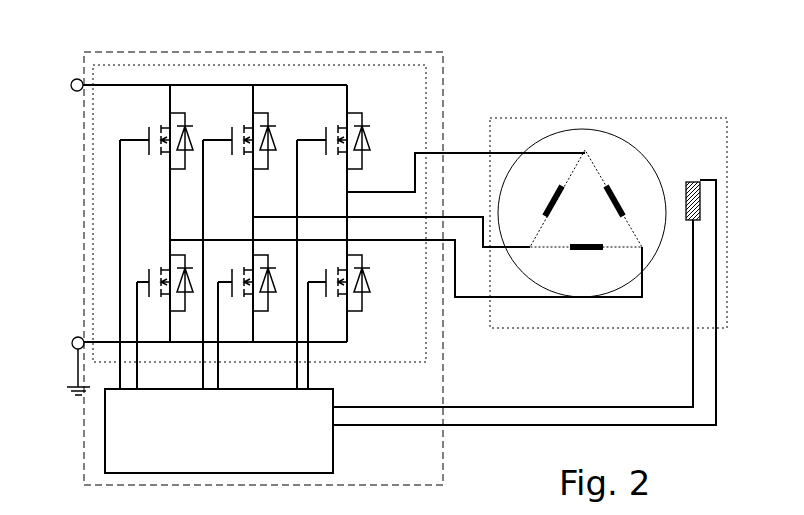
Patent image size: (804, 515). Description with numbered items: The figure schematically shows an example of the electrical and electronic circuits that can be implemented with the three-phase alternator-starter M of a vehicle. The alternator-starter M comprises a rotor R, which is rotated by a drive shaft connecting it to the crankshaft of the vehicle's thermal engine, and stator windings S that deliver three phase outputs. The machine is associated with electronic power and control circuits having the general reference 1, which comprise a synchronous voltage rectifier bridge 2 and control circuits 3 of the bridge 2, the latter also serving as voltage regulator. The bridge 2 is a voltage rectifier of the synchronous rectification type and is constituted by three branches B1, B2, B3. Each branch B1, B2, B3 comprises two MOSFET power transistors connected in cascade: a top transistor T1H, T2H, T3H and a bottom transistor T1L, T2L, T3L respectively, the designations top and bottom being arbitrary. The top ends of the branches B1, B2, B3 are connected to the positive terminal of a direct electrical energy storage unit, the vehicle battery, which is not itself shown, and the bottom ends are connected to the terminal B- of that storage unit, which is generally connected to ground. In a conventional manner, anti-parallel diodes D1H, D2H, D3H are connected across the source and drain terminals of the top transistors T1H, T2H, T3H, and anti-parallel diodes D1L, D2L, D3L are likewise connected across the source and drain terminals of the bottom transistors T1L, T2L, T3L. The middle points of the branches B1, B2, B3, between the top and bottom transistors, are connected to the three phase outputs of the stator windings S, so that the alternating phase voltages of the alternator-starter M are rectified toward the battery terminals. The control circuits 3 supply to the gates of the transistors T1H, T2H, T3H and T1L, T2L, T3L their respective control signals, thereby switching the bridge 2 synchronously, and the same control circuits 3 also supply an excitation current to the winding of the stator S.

The electronic power and control circuits 1 is at (420, 102).
The synchronous voltage rectifier bridge 2 is at (444, 81).
The control circuits 3 is at (322, 454).
The terminal B− B- is at (72, 347).
The first branch B1 is at (178, 106).
The second branch B2 is at (262, 106).
The third branch B3 is at (355, 106).
The top power transistor of the first branch T1H is at (149, 126).
The top power transistor of the second branch T2H is at (231, 152).
The top power transistor of the third branch T3H is at (325, 152).
The bottom power transistor of the first branch T1L is at (148, 272).
The bottom power transistor of the second branch T2L is at (235, 328).
The bottom power transistor of the third branch T3L is at (350, 312).
The anti-parallel diode D1H is at (194, 125).
The anti-parallel diode D2H is at (277, 125).
The anti-parallel diode D3H is at (371, 125).
The anti-parallel diode D1L is at (178, 262).
The anti-parallel diode D2L is at (277, 312).
The anti-parallel diode D3L is at (372, 294).
The alternator-starter M is at (602, 110).
The rotor R is at (626, 188).
The stator windings S is at (699, 178).